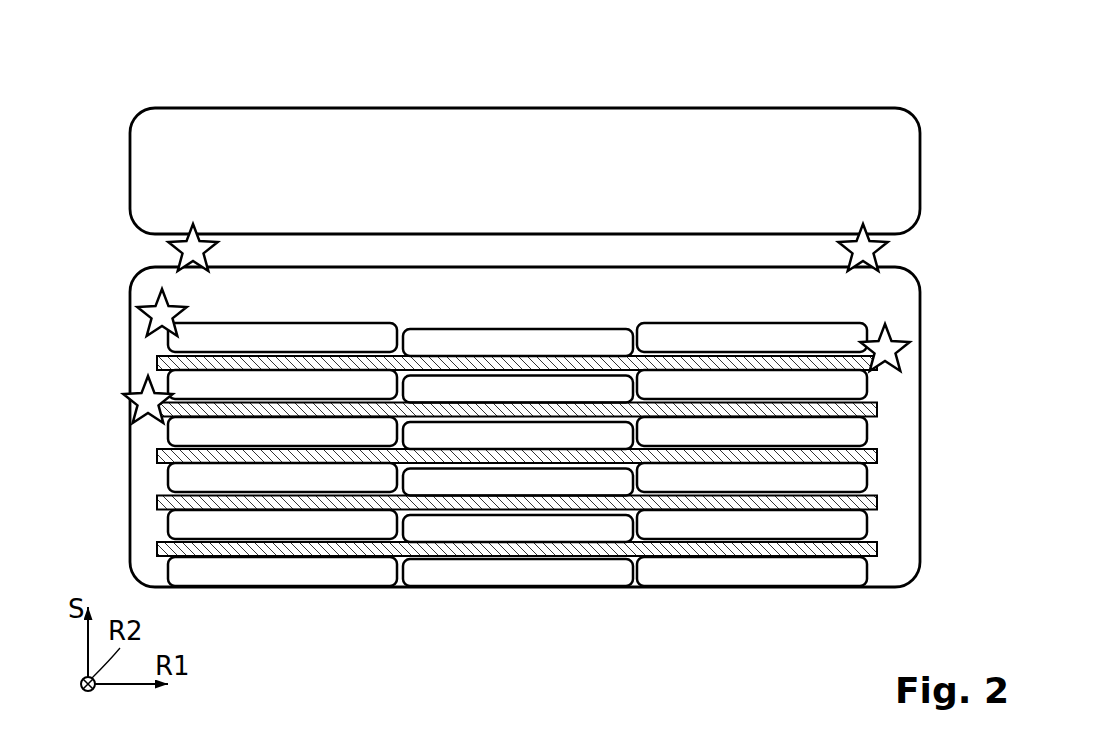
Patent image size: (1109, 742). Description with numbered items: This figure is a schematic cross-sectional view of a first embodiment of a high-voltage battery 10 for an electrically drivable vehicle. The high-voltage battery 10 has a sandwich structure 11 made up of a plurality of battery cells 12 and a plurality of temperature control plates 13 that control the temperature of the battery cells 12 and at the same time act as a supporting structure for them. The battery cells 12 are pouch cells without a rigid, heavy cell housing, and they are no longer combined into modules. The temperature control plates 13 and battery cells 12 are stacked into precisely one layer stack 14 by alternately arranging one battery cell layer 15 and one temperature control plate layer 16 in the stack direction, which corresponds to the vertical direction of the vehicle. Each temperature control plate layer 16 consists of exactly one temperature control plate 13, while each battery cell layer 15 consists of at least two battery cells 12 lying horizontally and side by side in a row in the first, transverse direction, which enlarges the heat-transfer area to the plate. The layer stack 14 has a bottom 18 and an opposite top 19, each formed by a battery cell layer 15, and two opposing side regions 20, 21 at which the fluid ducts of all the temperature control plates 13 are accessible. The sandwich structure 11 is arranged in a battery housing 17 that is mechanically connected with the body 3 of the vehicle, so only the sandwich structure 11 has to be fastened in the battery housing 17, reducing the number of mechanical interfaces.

The body 3 is at (438, 108).
The high-voltage battery 10 is at (529, 427).
The sandwich structure 11 is at (529, 420).
The battery cell 12 is at (473, 578).
The temperature control plate 13 is at (578, 560).
The layer stack 14 is at (830, 318).
The battery cell layer 15 is at (873, 478).
The temperature control plate layer 16 is at (880, 455).
The battery housing 17 is at (920, 490).
The bottom 18 is at (325, 588).
The top 19 is at (518, 420).
The side region 20 is at (160, 478).
The side region 21 is at (898, 405).